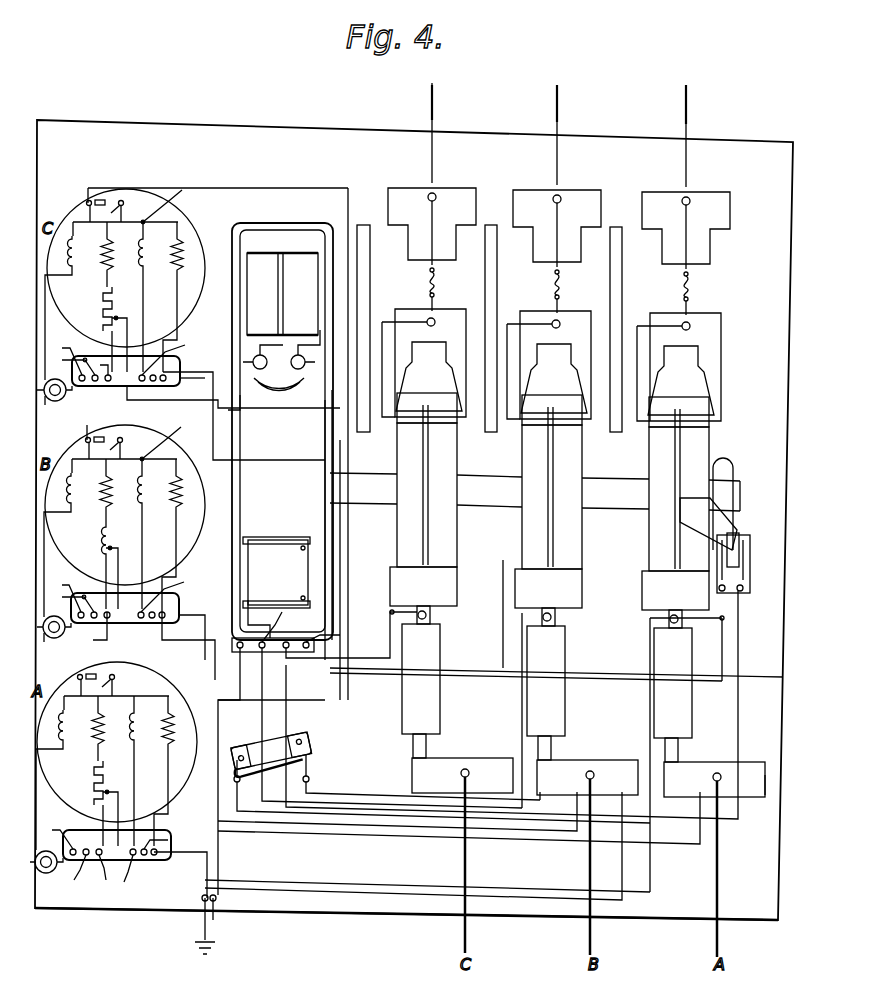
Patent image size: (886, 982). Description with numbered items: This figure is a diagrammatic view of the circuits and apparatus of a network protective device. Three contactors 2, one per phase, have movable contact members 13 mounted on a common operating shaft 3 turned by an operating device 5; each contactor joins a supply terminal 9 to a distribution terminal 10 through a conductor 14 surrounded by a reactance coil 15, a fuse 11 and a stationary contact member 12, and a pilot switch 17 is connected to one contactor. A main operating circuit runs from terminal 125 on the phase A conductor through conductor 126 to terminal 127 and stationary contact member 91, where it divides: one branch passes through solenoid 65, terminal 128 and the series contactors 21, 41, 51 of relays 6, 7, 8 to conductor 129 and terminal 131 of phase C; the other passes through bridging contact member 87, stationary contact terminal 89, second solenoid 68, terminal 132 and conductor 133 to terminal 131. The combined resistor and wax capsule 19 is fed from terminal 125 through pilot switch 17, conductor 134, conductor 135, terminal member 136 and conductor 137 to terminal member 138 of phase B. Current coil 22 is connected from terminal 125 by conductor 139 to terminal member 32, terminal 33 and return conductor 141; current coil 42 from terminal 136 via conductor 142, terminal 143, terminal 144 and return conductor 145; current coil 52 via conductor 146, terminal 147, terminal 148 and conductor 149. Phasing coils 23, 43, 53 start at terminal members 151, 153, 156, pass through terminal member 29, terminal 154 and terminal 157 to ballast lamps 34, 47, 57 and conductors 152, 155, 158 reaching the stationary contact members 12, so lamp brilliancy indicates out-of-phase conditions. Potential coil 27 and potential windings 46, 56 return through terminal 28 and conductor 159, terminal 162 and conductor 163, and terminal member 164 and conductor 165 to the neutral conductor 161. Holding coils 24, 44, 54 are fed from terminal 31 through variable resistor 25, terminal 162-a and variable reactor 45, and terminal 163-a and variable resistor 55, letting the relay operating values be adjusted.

The contactor 2 is at (460, 452).
The operating shaft 3 is at (470, 505).
The operating device 5 is at (300, 226).
The relay 6 is at (176, 802).
The relay 7 is at (192, 548).
The relay 8 is at (200, 290).
The terminal 9 is at (490, 760).
The terminal 10 is at (448, 198).
The fuse 11 is at (434, 286).
The stationary contact member 12 is at (457, 340).
The movable contact member 13 is at (450, 420).
The conductor 14 is at (428, 749).
The reactance coil 15 is at (441, 703).
The pilot switch 17 is at (732, 528).
The combined resistor and wax capsule 19 is at (270, 766).
The contactor 21 is at (78, 680).
The current coil 22 is at (168, 742).
The phasing coil 23 is at (136, 750).
The holding coil 24 is at (96, 736).
The variable resistor 25 is at (92, 779).
The potential coil 27 is at (61, 745).
The terminal member 28 is at (164, 841).
The terminal member 29 is at (124, 875).
The terminal 31 is at (97, 875).
The terminal member 32 is at (72, 875).
The terminal 33 is at (55, 836).
The ballast and indicating lamp 34 is at (46, 873).
The contactor 41 is at (97, 448).
The current coil 42 is at (174, 506).
The phasing coil 43 is at (149, 472).
The holding coil 44 is at (104, 499).
The variable reactor 45 is at (103, 555).
The potential winding 46 is at (69, 505).
The ballast lamp 47 is at (58, 633).
The contactor 51 is at (104, 212).
The current coil 52 is at (176, 258).
The phasing coil 53 is at (150, 235).
The holding coil 54 is at (105, 262).
The variable resistor 55 is at (113, 296).
The potential winding 56 is at (70, 268).
The ballast lamp 57 is at (54, 401).
The solenoid 65 is at (300, 258).
The second solenoid 68 is at (296, 545).
The bridging contact member 87 is at (280, 390).
The stationary contact terminal 89 is at (298, 345).
The stationary contact member 91 is at (260, 345).
The terminal 125 is at (680, 622).
The conductor 126 is at (556, 666).
The terminal 127 is at (262, 676).
The terminal 128 is at (268, 616).
The conductor 129 is at (310, 194).
The terminal 131 is at (430, 617).
The terminal 132 is at (333, 630).
The conductor 133 is at (372, 660).
The conductor 134 is at (752, 740).
The conductor 135 is at (348, 797).
The terminal member 136 is at (520, 800).
The conductor 137 is at (524, 696).
The terminal member 138 is at (556, 620).
The conductor 139 is at (400, 883).
The return conductor 141 is at (292, 836).
The conductor 142 is at (268, 811).
The terminal 143 is at (60, 590).
The terminal 144 is at (67, 599).
The return conductor 145 is at (450, 838).
The conductor 146 is at (232, 522).
The terminal 147 is at (62, 352).
The terminal 148 is at (68, 362).
The conductor 149 is at (188, 374).
The terminal member 151 is at (188, 644).
The conductor 152 is at (285, 891).
The terminal member 153 is at (136, 440).
The terminal 154 is at (173, 590).
The conductor 155 is at (294, 697).
The terminal 156 is at (135, 197).
The terminal 157 is at (177, 351).
The conductor 158 is at (290, 418).
The conductor 159 is at (180, 875).
The neutral conductor 161 is at (212, 935).
The terminal 162 is at (186, 637).
The terminal 162-a is at (111, 635).
The conductor 163 is at (234, 771).
The terminal 163-a is at (114, 361).
The terminal member 164 is at (196, 375).
The conductor 165 is at (178, 397).